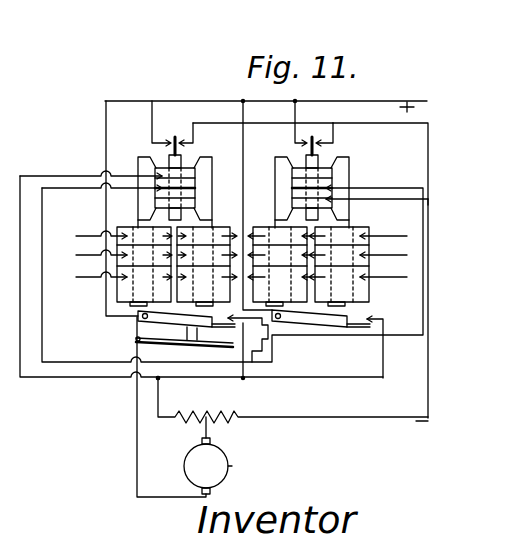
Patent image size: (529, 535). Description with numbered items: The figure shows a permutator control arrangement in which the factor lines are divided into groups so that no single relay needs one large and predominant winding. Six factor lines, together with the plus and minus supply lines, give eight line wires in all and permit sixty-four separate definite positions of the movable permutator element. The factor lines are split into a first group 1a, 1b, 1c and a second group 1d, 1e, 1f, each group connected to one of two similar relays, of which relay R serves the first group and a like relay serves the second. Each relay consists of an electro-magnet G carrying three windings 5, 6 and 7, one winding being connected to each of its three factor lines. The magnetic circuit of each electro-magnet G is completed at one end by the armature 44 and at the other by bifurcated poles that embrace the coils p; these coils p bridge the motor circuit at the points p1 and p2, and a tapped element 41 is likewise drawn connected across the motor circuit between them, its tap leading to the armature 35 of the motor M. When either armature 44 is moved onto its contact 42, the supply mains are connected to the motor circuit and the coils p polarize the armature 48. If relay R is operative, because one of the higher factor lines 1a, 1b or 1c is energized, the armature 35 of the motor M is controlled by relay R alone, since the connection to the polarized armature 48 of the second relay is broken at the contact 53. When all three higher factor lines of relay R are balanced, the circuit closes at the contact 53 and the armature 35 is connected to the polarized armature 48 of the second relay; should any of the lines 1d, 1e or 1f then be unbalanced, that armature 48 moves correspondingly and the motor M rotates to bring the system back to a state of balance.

The polarized armature 48 is at (181, 156).
The winding 7 is at (243, 237).
The winding 6 is at (243, 257).
The winding 5 is at (238, 291).
The armature 44 is at (317, 318).
The contact 53 is at (232, 348).
The contact 42 is at (260, 345).
The resistance with adjustable tap 41x 41 is at (208, 413).
The armature of the motor 35 is at (206, 466).
The factor line 1a is at (91, 278).
The factor line 1b is at (91, 257).
The factor line 1c is at (91, 238).
The factor line 1d is at (390, 279).
The factor line 1e is at (389, 249).
The factor line 1f is at (388, 229).
The electro-magnet G is at (363, 212).
The coil p is at (188, 200).
The bridging point p1 is at (159, 379).
The bridging point p2 is at (429, 199).
The relay R is at (234, 274).
The motor M is at (244, 465).